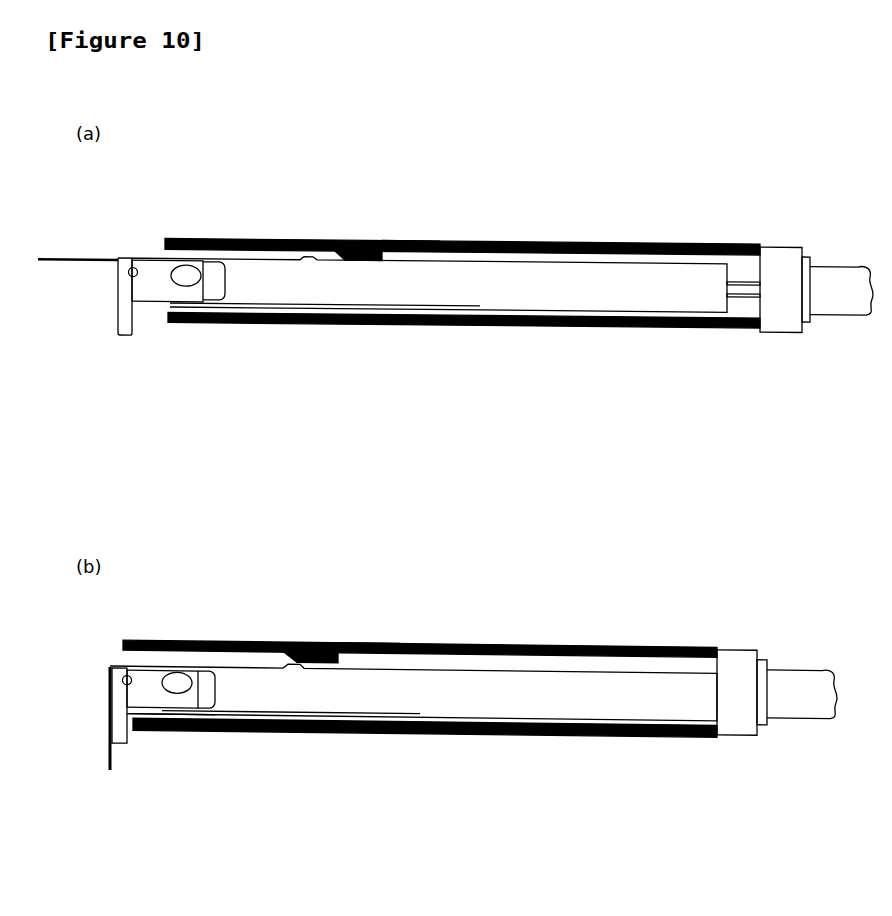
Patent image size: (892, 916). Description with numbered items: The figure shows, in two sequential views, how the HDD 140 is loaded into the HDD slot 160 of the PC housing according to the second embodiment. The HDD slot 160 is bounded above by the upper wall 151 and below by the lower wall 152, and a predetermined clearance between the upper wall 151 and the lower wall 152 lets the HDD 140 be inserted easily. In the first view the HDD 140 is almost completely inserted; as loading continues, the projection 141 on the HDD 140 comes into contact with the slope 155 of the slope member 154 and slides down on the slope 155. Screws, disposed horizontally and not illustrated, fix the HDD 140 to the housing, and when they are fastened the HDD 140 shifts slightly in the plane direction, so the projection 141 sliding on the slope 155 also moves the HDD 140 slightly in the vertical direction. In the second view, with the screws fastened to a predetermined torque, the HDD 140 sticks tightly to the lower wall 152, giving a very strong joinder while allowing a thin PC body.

The HDD 140 is at (570, 263).
The projection 141 is at (278, 248).
The upper wall 151 is at (490, 242).
The lower wall 152 is at (563, 328).
The slope member 154 is at (395, 242).
The slope 155 is at (349, 246).
The HDD slot 160 is at (680, 262).